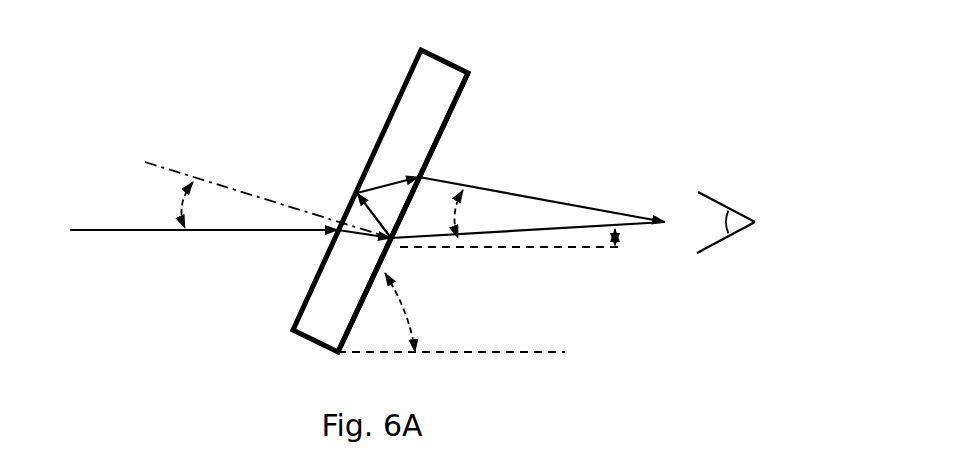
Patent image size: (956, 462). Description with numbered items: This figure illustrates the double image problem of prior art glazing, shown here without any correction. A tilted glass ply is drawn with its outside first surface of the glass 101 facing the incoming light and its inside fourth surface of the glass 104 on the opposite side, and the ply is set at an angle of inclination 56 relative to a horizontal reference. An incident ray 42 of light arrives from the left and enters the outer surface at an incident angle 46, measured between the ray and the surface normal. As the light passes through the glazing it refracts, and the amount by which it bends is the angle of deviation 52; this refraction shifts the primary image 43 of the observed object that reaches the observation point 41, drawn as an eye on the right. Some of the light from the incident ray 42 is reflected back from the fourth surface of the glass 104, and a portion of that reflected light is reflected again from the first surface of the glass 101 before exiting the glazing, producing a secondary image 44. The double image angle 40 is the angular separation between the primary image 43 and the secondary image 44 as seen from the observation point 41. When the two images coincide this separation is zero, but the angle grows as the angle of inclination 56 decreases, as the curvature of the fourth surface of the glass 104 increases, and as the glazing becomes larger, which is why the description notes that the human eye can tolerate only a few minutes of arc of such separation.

The first surface of the glass 101 is at (408, 73).
The fourth surface of the glass 104 is at (468, 83).
The incident ray 42 is at (180, 230).
The incident angle 46 is at (268, 200).
The primary image 43 is at (397, 243).
The double image angle 40 is at (470, 210).
The secondary image 44 is at (463, 193).
The angle of deviation 52 is at (627, 252).
The angle of inclination 56 is at (412, 303).
The observation point 41 is at (758, 218).